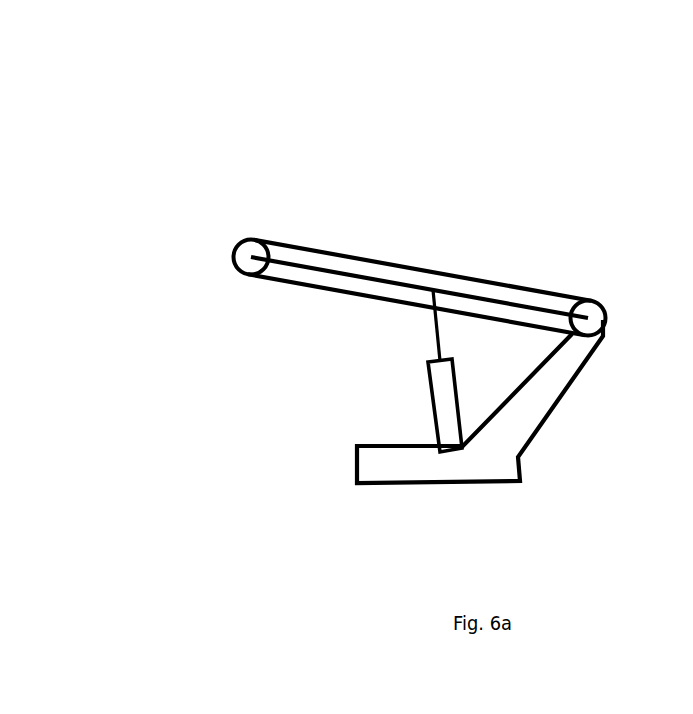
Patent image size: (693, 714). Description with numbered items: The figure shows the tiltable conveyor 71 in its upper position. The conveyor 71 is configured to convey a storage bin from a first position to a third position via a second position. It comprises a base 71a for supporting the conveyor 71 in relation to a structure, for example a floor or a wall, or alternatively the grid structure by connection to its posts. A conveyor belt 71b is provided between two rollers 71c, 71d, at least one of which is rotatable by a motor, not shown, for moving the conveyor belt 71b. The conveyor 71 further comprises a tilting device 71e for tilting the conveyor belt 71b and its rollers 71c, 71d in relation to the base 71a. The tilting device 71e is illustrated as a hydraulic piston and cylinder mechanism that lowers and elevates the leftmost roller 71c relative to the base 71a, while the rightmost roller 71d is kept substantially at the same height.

The tiltable conveyor 71 is at (403, 117).
The base 71a is at (508, 437).
The conveyor belt 71b is at (385, 303).
The roller 71c is at (240, 273).
The roller 71d is at (588, 318).
The tilting device 71e is at (428, 385).